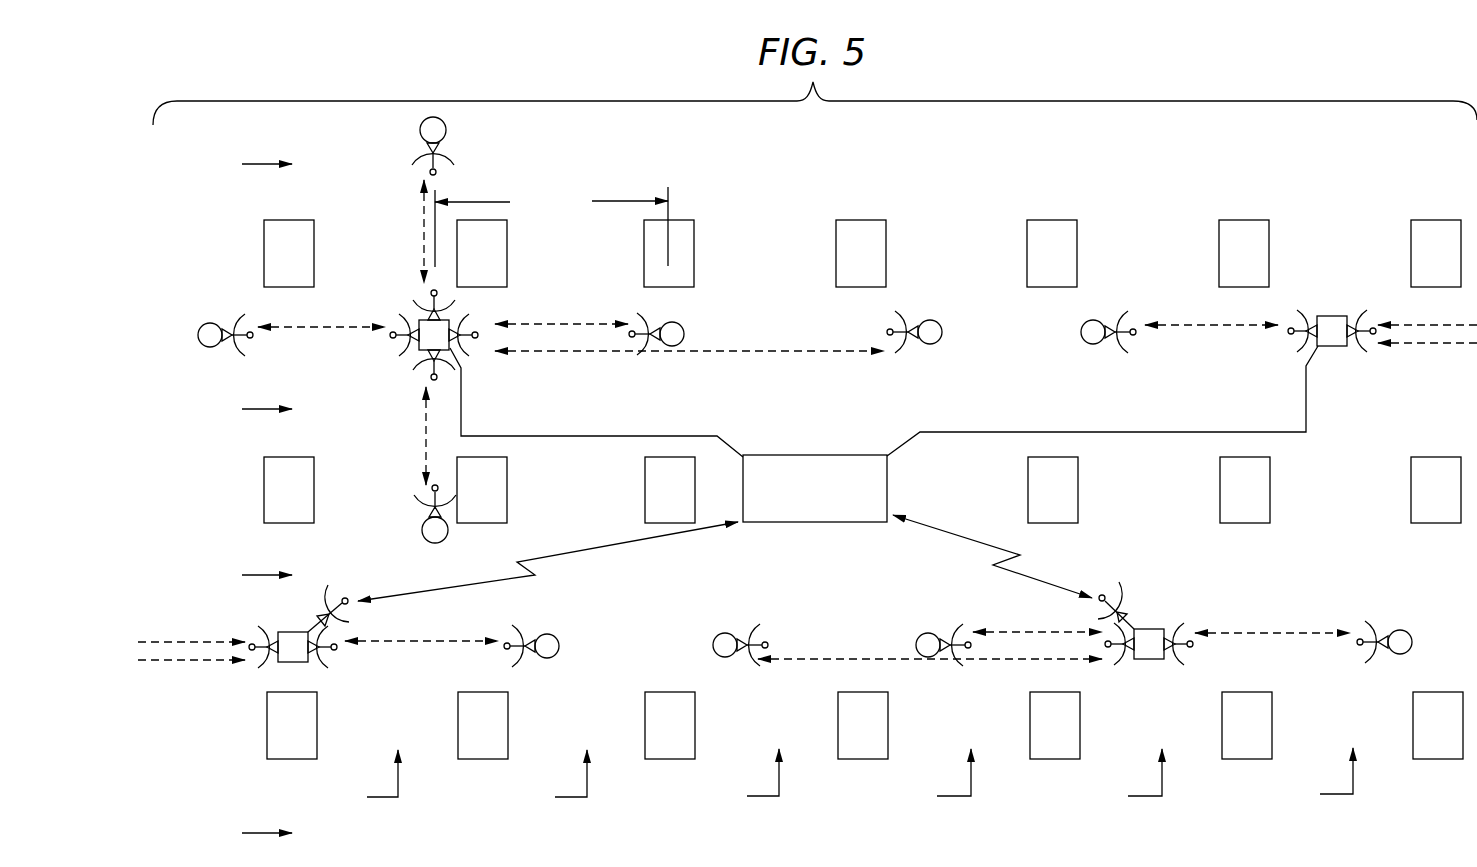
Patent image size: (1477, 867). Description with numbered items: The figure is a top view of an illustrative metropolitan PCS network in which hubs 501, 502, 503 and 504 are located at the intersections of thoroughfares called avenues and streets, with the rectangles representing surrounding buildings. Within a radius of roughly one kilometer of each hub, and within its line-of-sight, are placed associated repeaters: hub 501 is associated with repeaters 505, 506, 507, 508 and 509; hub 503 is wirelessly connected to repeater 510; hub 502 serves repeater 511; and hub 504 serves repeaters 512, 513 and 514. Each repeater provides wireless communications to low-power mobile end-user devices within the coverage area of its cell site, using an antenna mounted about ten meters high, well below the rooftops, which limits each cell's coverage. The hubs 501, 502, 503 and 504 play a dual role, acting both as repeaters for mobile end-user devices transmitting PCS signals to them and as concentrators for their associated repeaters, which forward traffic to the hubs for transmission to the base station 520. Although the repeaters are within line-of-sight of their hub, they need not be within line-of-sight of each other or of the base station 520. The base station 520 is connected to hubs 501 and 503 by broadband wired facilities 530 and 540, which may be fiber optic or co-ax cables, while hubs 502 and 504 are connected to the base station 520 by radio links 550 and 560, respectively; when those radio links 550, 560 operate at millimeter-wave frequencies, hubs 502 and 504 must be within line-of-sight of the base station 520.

The hub 501 is at (457, 316).
The hub 502 is at (297, 663).
The hub 503 is at (1330, 314).
The hub 504 is at (1150, 660).
The repeater 505 is at (683, 325).
The repeater 506 is at (422, 532).
The repeater 507 is at (215, 323).
The repeater 508 is at (446, 130).
The repeater 509 is at (930, 320).
The repeater 510 is at (1095, 320).
The repeater 511 is at (545, 659).
The repeater 512 is at (725, 658).
The repeater 513 is at (928, 658).
The repeater 514 is at (1398, 655).
The base station 520 is at (830, 455).
The broadband wired facility 530 is at (557, 436).
The broadband wired facility 540 is at (1307, 418).
The radio link 550 is at (563, 540).
The radio link 560 is at (1022, 552).